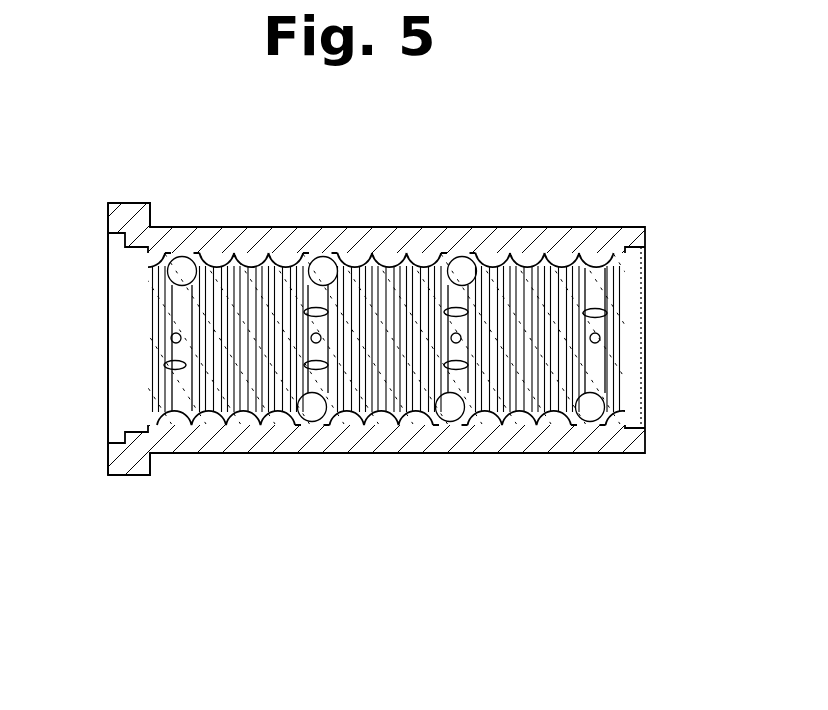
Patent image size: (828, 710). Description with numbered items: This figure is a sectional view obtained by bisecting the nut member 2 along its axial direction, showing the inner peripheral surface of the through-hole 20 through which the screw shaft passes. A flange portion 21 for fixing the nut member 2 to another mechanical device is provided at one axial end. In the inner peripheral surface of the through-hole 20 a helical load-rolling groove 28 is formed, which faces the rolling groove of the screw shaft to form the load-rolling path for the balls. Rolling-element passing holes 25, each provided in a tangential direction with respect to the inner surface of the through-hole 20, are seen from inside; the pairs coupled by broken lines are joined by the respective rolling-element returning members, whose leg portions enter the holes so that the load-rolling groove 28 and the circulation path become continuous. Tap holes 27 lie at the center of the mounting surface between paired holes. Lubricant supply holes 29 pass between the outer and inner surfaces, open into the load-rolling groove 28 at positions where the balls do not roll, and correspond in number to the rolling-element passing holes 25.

The nut member 2 is at (543, 222).
The through-hole 20 is at (632, 288).
The flange portion 21 is at (123, 203).
The rolling-element passing hole 25 is at (184, 257).
The tap hole 27 is at (270, 282).
The load-rolling groove 28 is at (378, 254).
The lubricant supply hole 29 is at (305, 275).